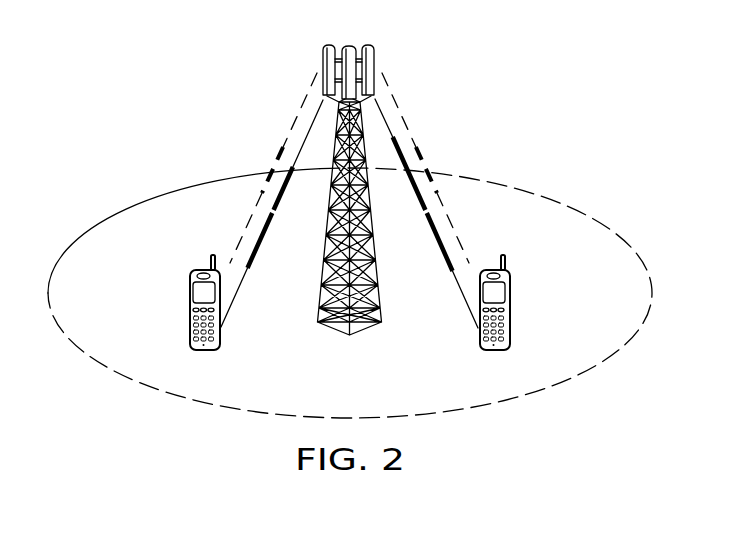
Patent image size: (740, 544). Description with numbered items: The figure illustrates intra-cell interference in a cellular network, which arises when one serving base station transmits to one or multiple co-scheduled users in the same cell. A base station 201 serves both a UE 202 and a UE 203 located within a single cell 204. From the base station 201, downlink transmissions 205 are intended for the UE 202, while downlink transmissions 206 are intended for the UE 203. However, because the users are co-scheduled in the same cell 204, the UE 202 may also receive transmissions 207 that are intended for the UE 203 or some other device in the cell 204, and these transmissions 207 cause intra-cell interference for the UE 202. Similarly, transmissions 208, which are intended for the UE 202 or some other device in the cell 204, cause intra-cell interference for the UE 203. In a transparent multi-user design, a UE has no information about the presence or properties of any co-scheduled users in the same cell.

The base station 201 is at (351, 334).
The UE 202 is at (188, 311).
The UE 203 is at (512, 311).
The cell 204 is at (141, 197).
The downlink transmissions 205 is at (289, 132).
The downlink transmissions 206 is at (450, 268).
The transmissions 207 is at (239, 288).
The transmissions 208 is at (410, 132).